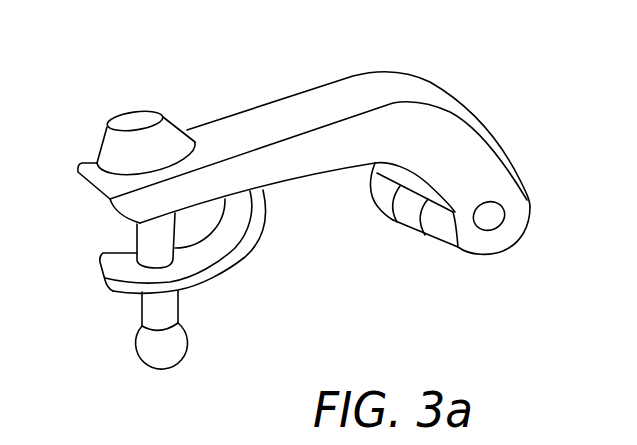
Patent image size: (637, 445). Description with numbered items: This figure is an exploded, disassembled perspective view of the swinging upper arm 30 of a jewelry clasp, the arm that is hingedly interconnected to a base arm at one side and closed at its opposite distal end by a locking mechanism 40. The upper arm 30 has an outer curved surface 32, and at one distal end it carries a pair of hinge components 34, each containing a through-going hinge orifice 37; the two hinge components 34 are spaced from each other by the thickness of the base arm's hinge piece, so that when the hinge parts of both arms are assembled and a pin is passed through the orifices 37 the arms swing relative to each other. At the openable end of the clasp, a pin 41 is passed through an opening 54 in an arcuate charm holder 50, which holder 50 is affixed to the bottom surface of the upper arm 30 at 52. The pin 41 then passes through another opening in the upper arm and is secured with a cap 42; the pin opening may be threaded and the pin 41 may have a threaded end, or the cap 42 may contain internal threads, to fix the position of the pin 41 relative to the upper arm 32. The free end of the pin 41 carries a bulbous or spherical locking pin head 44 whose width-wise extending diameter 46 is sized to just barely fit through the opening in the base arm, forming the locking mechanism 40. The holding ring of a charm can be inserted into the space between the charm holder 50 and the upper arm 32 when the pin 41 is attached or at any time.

The swinging upper arm 30 is at (496, 83).
The outer curved surface 32 is at (248, 122).
The hinge components 34 is at (530, 207).
The hinge orifices 37 is at (488, 218).
The locking mechanism 40 is at (152, 240).
The pin 41 is at (157, 309).
The cap 42 is at (102, 138).
The locking pin head 44 is at (180, 367).
The width-wise extending diameter 46 is at (163, 343).
The arcuate charm holder 50 is at (236, 270).
The charm holder attachment location 52 is at (265, 185).
The opening in the charm holder 54 is at (157, 258).